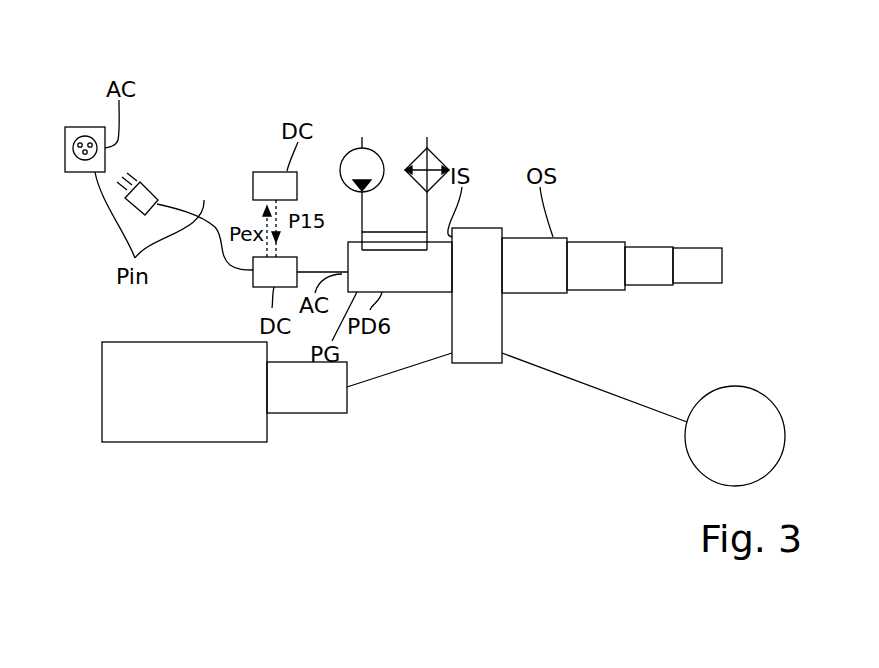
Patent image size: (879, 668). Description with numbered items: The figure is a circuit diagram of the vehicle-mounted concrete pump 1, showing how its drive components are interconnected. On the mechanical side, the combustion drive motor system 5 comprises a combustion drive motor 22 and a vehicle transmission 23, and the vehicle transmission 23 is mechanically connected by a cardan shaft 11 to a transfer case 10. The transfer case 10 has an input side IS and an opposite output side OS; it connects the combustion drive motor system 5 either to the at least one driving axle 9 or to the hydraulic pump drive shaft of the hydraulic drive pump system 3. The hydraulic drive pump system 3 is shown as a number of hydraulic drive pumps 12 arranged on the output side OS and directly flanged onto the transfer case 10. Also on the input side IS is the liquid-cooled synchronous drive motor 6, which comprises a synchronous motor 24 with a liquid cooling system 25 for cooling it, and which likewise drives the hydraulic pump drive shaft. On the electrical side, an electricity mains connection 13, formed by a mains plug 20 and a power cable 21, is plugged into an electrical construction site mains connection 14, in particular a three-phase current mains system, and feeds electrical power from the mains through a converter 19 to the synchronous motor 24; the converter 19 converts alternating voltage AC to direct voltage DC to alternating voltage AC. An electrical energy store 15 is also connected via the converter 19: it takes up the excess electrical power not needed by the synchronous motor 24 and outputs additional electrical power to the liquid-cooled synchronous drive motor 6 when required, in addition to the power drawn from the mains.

The vehicle-mounted concrete pump 1 is at (85, 74).
The electrical construction site mains connection 14 is at (77, 172).
The mains plug 20 is at (143, 181).
The electricity mains connection 13 is at (204, 200).
The electrical energy store 15 is at (270, 171).
The power cable 21 is at (222, 241).
The converter 19 is at (262, 287).
The liquid cooling system 25 is at (425, 143).
The liquid-cooled synchronous drive motor 6 is at (409, 232).
The synchronous motor 24 is at (428, 292).
The transfer case 10 is at (485, 228).
The hydraulic drive pump system 3 is at (686, 247).
The hydraulic drive pumps 12 is at (686, 284).
The combustion drive motor 22 is at (125, 442).
The vehicle transmission 23 is at (333, 413).
The combustion drive motor system 5 is at (295, 413).
The cardan shaft 11 is at (412, 370).
The driving axle 9 is at (683, 440).